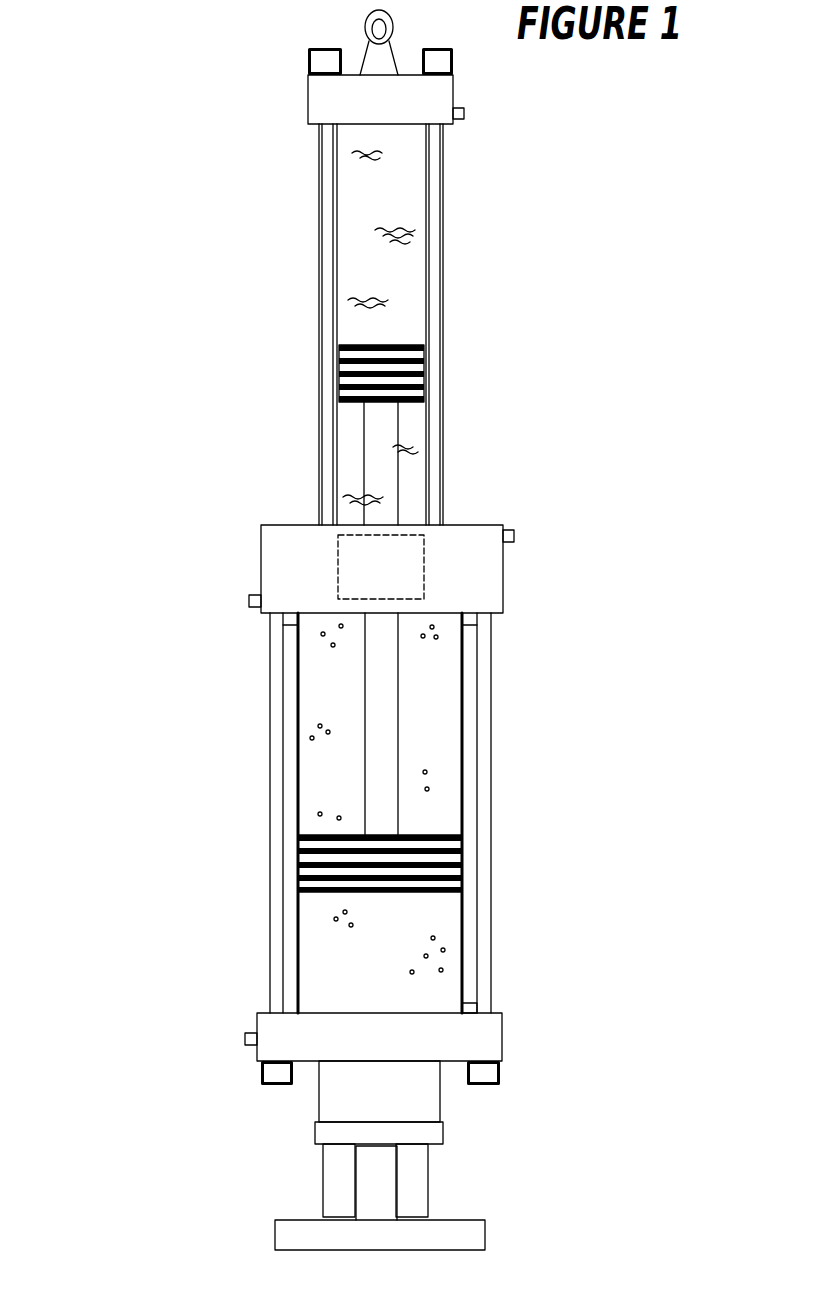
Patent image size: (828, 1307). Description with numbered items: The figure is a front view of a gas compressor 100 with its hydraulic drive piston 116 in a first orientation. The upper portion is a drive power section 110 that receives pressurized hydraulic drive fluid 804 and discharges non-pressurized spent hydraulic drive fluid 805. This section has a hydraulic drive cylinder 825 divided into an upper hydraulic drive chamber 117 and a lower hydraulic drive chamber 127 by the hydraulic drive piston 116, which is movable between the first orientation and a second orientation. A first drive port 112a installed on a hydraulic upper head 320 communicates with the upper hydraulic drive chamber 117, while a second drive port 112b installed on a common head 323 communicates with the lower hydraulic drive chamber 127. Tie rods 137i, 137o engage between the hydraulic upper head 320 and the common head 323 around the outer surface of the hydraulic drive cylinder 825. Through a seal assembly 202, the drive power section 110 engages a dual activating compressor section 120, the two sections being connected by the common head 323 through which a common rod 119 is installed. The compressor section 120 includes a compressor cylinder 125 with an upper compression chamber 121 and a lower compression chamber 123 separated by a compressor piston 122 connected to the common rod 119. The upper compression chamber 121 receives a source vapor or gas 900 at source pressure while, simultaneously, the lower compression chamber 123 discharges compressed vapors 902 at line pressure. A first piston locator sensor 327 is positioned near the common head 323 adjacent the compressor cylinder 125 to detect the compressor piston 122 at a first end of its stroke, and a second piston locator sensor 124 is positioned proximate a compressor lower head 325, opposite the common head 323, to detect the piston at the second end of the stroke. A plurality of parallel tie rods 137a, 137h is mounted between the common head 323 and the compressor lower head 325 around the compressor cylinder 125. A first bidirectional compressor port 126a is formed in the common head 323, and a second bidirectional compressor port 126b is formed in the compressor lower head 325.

The gas compressor 100 is at (110, 84).
The drive power section 110 is at (256, 226).
The first drive port 112a is at (459, 108).
The second drive port 112b is at (525, 521).
The hydraulic drive piston 116 is at (424, 345).
The upper hydraulic drive chamber 117 is at (352, 184).
The common rod 119 is at (398, 705).
The dual activating compressor section 120 is at (200, 725).
The upper compression chamber 121 is at (316, 687).
The compressor piston 122 is at (445, 835).
The lower compression chamber 123 is at (316, 910).
The second piston locator sensor 124 is at (467, 1003).
The compressor cylinder 125 is at (465, 752).
The first bidirectional compressor port 126a is at (250, 600).
The second bidirectional compressor port 126b is at (250, 1012).
The lower hydraulic drive chamber 127 is at (354, 457).
The tie rod 137a is at (493, 778).
The tie rod 137h is at (270, 779).
The tie rod 137i is at (319, 292).
The tie rod 137o is at (443, 292).
The seal assembly 202 is at (338, 568).
The hydraulic upper head 320 is at (308, 104).
The common head 323 is at (503, 577).
The compressor lower head 325 is at (503, 1040).
The first piston locator sensor 327 is at (467, 626).
The pressurized hydraulic drive fluid 804 is at (400, 232).
The spent hydraulic drive fluid 805 is at (405, 451).
The hydraulic drive cylinder 825 is at (426, 261).
The source vapor or gas 900 is at (312, 738).
The compressed vapors 902 is at (433, 938).